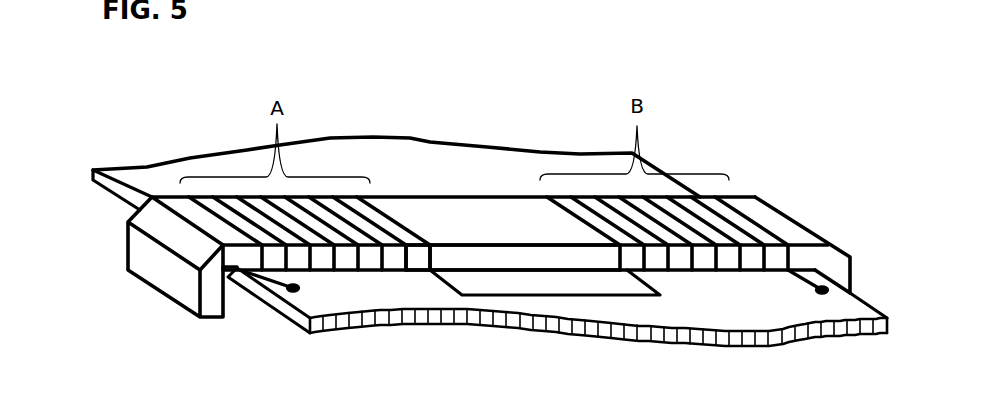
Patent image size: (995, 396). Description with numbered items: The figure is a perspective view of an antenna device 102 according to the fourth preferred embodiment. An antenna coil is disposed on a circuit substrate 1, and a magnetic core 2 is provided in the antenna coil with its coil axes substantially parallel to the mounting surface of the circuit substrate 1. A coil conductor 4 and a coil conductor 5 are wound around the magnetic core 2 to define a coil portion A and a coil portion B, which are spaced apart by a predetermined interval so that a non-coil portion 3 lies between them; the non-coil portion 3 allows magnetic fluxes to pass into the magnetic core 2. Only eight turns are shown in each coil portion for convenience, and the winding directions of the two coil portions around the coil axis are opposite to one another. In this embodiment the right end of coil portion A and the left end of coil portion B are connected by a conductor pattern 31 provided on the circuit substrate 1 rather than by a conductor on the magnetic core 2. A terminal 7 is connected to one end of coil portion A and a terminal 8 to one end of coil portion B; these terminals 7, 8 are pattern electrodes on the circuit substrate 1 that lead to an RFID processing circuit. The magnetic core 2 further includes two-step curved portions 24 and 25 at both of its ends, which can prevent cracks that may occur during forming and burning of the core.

The circuit substrate 1 is at (483, 170).
The magnetic core 2 is at (422, 258).
The non-coil portion 3 is at (470, 210).
The coil conductor 4 is at (355, 263).
The coil conductor 5 is at (738, 260).
The terminal 7 is at (292, 289).
The terminal 8 is at (817, 294).
The two-step curved portion 24 is at (157, 273).
The two-step curved portion 25 is at (797, 220).
The conductor pattern 31 is at (593, 297).
The antenna device 102 is at (143, 60).